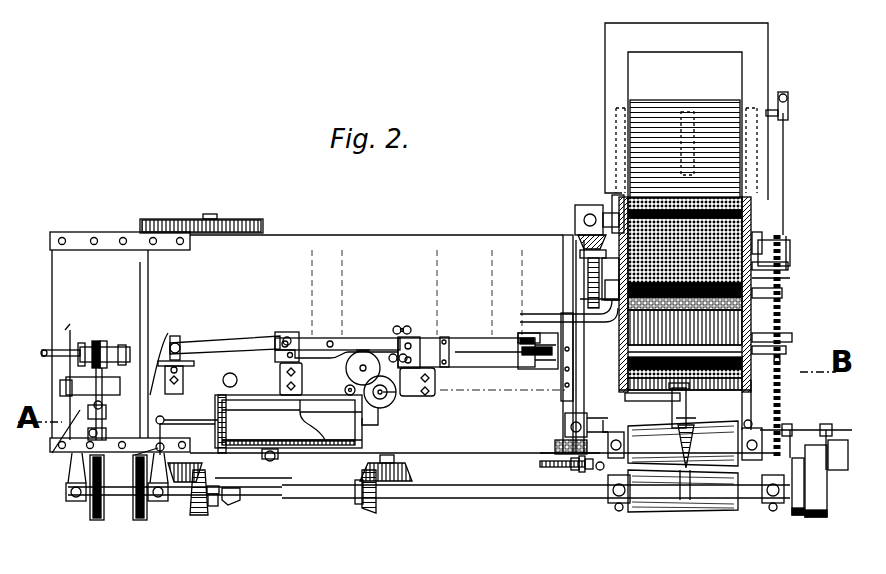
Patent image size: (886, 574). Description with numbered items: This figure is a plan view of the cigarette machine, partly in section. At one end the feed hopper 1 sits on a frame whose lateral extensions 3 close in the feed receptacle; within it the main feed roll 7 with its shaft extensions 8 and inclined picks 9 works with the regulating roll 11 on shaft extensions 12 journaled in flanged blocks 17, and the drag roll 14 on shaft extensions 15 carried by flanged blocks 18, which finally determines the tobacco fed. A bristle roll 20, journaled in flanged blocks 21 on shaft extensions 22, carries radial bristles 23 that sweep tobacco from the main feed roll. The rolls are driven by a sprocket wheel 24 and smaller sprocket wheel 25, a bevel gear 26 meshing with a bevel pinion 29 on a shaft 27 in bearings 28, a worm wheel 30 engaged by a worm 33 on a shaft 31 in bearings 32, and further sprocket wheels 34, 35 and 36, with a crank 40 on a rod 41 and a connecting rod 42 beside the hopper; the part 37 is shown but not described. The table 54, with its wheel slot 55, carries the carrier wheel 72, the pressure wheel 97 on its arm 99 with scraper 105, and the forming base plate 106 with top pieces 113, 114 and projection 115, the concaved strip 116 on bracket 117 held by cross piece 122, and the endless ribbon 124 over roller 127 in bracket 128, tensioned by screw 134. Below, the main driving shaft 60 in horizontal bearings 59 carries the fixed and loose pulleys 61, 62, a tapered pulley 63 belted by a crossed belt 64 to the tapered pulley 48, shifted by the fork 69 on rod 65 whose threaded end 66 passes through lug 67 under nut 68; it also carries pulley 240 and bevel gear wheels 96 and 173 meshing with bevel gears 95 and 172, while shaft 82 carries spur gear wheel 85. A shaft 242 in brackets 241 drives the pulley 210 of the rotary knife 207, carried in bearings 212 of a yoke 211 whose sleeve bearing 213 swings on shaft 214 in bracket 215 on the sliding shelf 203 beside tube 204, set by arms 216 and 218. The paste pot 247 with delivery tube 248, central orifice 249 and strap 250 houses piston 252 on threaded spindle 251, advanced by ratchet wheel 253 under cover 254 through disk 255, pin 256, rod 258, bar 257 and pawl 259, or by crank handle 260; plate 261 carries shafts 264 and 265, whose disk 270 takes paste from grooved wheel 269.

The feed hopper 1 is at (760, 80).
The lateral extensions 3 is at (618, 197).
The main feed roll 7 is at (752, 236).
The shaft extensions 8 is at (602, 284).
The picks 9 is at (752, 218).
The regulating roll 11 is at (752, 303).
The shaft extensions 12 is at (580, 299).
The drag roll 14 is at (752, 326).
The shaft extensions 15 is at (532, 322).
The flanged blocks 17 is at (612, 298).
The flanged blocks 18 is at (520, 314).
The roll 20 is at (722, 372).
The flanged blocks 21 is at (752, 372).
The shaft extensions 22 is at (779, 362).
The bristles 23 is at (650, 398).
The sprocket wheel 24 is at (580, 252).
The sprocket wheel 25 is at (586, 360).
The bevel gear 26 is at (588, 268).
The shaft 27 is at (565, 405).
The bearings 28 is at (574, 214).
The bevel pinion 29 is at (578, 238).
The worm wheel 30 is at (555, 443).
The shaft 31 is at (624, 438).
The bearings 32 is at (750, 426).
The worm 33 is at (556, 451).
The sprocket wheel 34 is at (790, 426).
The sprocket wheel 35 is at (790, 266).
The sprocket wheel 36 is at (786, 352).
The bracket 37 is at (764, 240).
The crank 40 is at (790, 102).
The rod 41 is at (778, 113).
The connecting rod 42 is at (786, 160).
The tapered pulley 48 is at (683, 443).
The table 54 is at (350, 240).
The wheel slot 55 is at (520, 372).
The horizontal bearings 59 is at (620, 511).
The main driving shaft 60 is at (492, 500).
The fixed pulley 61 is at (797, 516).
The loose pulley 62 is at (815, 518).
The tapered pulley 63 is at (683, 491).
The crossed belt 64 is at (690, 502).
The rod 65 is at (586, 468).
The threaded end 66 is at (545, 467).
The lug 67 is at (582, 473).
The nut 68 is at (575, 471).
The fork 69 is at (678, 490).
The carrier wheel 72 is at (792, 340).
The shaft 82 is at (205, 218).
The spur gear wheel 85 is at (250, 228).
The bevel gear 95 is at (186, 484).
The bevel gear wheel 96 is at (202, 516).
The pressure wheel 97 is at (520, 346).
The arm 99 is at (590, 408).
The scraper 105 is at (546, 368).
The longitudinal plate 106 is at (456, 368).
The top piece 113 is at (302, 372).
The top piece 114 is at (300, 337).
The projection 115 is at (330, 350).
The concaved strip 116 is at (412, 336).
The bracket 117 is at (400, 326).
The cross piece 122 is at (446, 336).
The endless ribbon 124 is at (230, 346).
The roller 127 is at (182, 340).
The bracket 128 is at (196, 370).
The screw 134 is at (243, 370).
The bevel gear wheel 172 is at (414, 472).
The bevel gear wheel 173 is at (376, 510).
The sliding shelf 203 is at (125, 279).
The tube 204 is at (50, 357).
The rotary knife 207 is at (72, 330).
The pulley 210 is at (102, 344).
The yoke 211 is at (118, 378).
The bearings 212 is at (82, 346).
The sleeve bearing 213 is at (106, 402).
The shaft 214 is at (62, 390).
The bracket 215 is at (161, 357).
The arm 216 is at (100, 420).
The arm 218 is at (55, 452).
The pulley 240 is at (142, 520).
The brackets 241 is at (72, 502).
The shaft 242 is at (125, 497).
The paste pot 247 is at (345, 422).
The delivery tube 248 is at (377, 429).
The central orifice 249 is at (215, 418).
The strap 250 is at (276, 460).
The threaded spindle 251 is at (187, 413).
The piston 252 is at (288, 421).
The ratchet wheel 253 is at (226, 398).
The cover 254 is at (237, 382).
The disk 255 is at (215, 494).
The pin 256 is at (213, 506).
The bar 257 is at (254, 479).
The rod 258 is at (242, 498).
The pawl 259 is at (205, 448).
The crank handle 260 is at (148, 452).
The plate 261 is at (345, 390).
The shaft 264 is at (398, 392).
The shaft 265 is at (364, 364).
The wheel 269 is at (390, 402).
The disk 270 is at (355, 348).